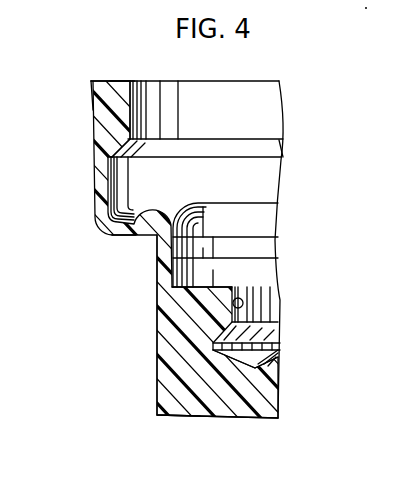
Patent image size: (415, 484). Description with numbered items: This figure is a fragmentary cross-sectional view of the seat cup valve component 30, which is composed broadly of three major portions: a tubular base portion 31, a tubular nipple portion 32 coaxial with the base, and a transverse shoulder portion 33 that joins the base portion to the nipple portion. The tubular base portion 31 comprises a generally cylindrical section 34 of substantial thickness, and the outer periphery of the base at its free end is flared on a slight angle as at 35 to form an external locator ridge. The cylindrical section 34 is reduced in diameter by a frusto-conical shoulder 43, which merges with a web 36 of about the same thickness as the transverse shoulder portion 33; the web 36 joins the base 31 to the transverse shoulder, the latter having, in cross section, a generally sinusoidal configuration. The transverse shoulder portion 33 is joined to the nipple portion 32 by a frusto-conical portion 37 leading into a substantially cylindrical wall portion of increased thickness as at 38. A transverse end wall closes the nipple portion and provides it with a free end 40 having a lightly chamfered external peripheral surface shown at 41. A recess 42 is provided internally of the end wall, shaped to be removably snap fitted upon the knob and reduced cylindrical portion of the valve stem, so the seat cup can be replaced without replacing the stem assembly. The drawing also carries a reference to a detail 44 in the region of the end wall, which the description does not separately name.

The seat cup valve component 30 is at (145, 270).
The tubular base portion 31 is at (92, 137).
The tubular nipple portion 32 is at (156, 382).
The transverse shoulder portion 33 is at (118, 240).
The cylindrical section 34 is at (120, 82).
The external locator ridge 35 is at (91, 96).
The web 36 is at (103, 195).
The frusto-conical portion 37 is at (186, 240).
The wall portion of increased thickness 38 is at (176, 269).
The free end 40 is at (270, 420).
The chamfered external peripheral surface 41 is at (180, 418).
The recess 42 is at (268, 303).
The frusto-conical shoulder 43 is at (233, 306).
The seal lip 44 is at (288, 336).